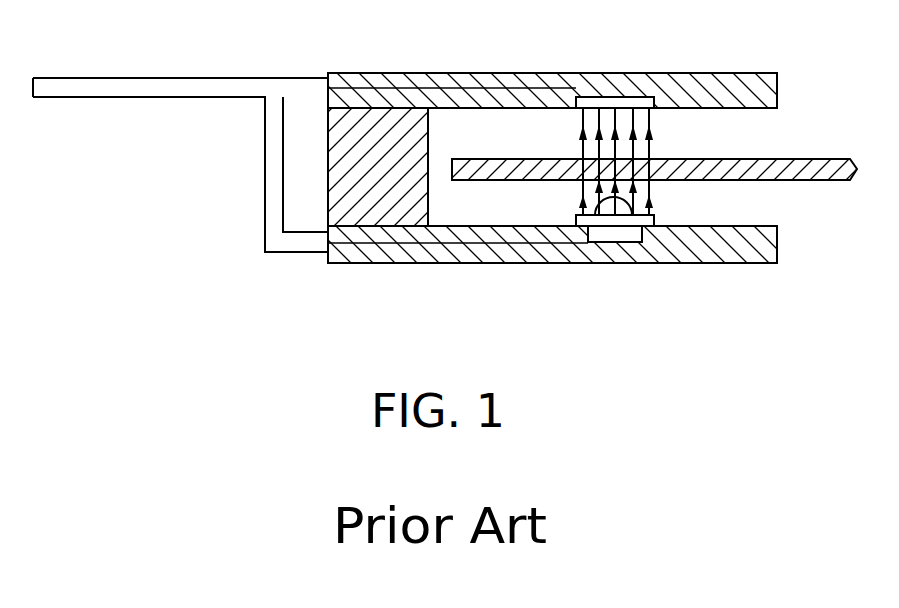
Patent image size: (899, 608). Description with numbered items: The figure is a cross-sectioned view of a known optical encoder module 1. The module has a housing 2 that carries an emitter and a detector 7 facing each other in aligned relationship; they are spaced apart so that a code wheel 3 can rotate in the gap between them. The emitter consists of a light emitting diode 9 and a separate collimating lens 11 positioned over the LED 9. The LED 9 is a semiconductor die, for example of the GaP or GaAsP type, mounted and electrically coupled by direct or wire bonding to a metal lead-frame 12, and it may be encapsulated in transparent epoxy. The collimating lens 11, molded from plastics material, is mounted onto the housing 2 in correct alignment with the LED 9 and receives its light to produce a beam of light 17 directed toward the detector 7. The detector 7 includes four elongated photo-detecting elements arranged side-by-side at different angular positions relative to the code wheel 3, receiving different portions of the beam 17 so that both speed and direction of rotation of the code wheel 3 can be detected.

The optical encoder module 1 is at (380, 263).
The housing 2 is at (728, 246).
The code wheel 3 is at (780, 166).
The detector 7 is at (628, 104).
The light emitting diode 9 is at (610, 233).
The collimating lens 11 is at (623, 212).
The metal lead-frame 12 is at (487, 247).
The beam of light 17 is at (650, 148).